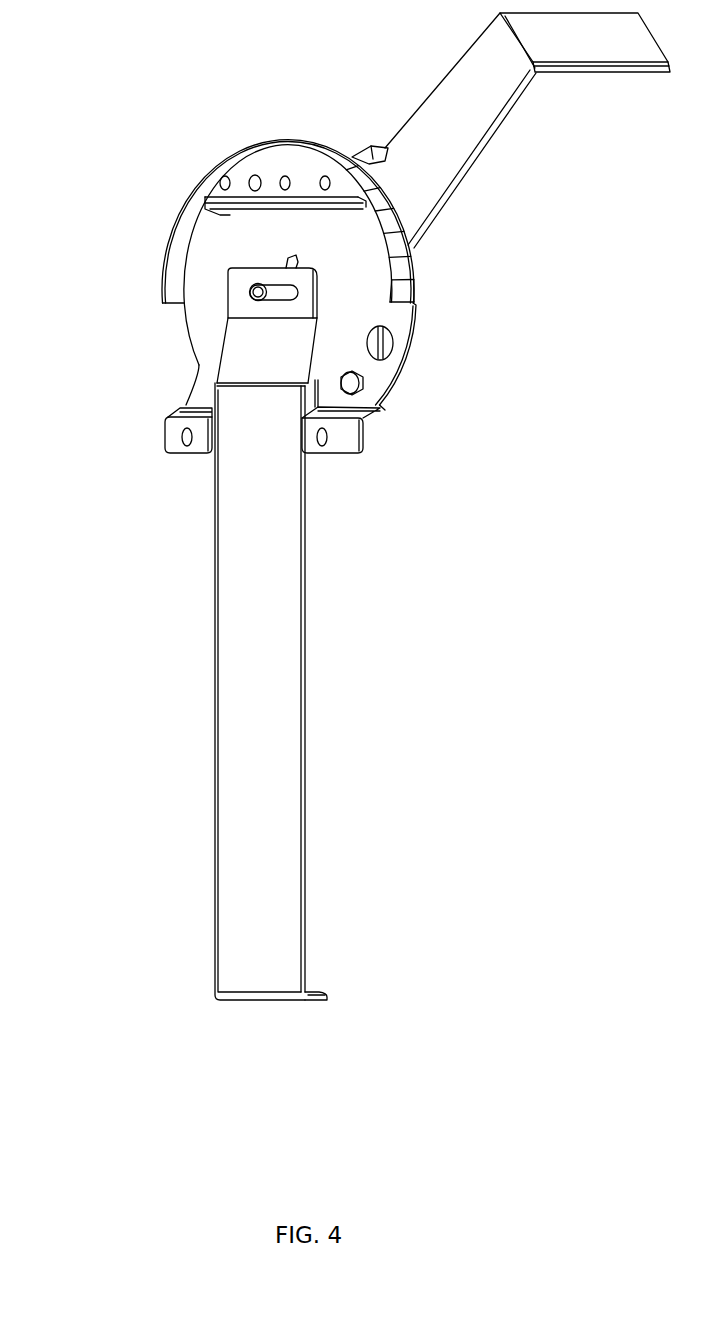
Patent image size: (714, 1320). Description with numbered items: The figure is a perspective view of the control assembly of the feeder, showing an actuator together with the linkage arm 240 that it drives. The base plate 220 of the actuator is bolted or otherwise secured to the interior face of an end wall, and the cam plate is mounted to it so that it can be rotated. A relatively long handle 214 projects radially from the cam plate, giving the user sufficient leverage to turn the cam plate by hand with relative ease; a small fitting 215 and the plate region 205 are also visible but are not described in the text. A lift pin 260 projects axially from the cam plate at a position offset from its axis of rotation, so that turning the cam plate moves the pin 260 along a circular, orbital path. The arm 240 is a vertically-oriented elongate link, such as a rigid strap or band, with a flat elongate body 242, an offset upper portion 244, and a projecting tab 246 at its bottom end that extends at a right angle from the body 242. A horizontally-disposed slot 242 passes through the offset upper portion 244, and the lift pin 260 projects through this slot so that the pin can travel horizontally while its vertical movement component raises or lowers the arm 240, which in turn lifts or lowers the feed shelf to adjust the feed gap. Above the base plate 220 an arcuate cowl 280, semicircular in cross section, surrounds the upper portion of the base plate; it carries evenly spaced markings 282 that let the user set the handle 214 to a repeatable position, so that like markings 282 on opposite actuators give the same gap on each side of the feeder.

The hub plate 205 is at (320, 298).
The handle 214 is at (477, 87).
The clip 215 is at (363, 148).
The base plate 220 is at (302, 252).
The linkage arm 240 is at (230, 693).
The body 242 is at (271, 300).
The offset upper portion 244 is at (280, 355).
The projecting tab 246 is at (312, 995).
The lift pin 260 is at (257, 290).
The cowl 280 is at (402, 263).
The markings 282 is at (405, 290).